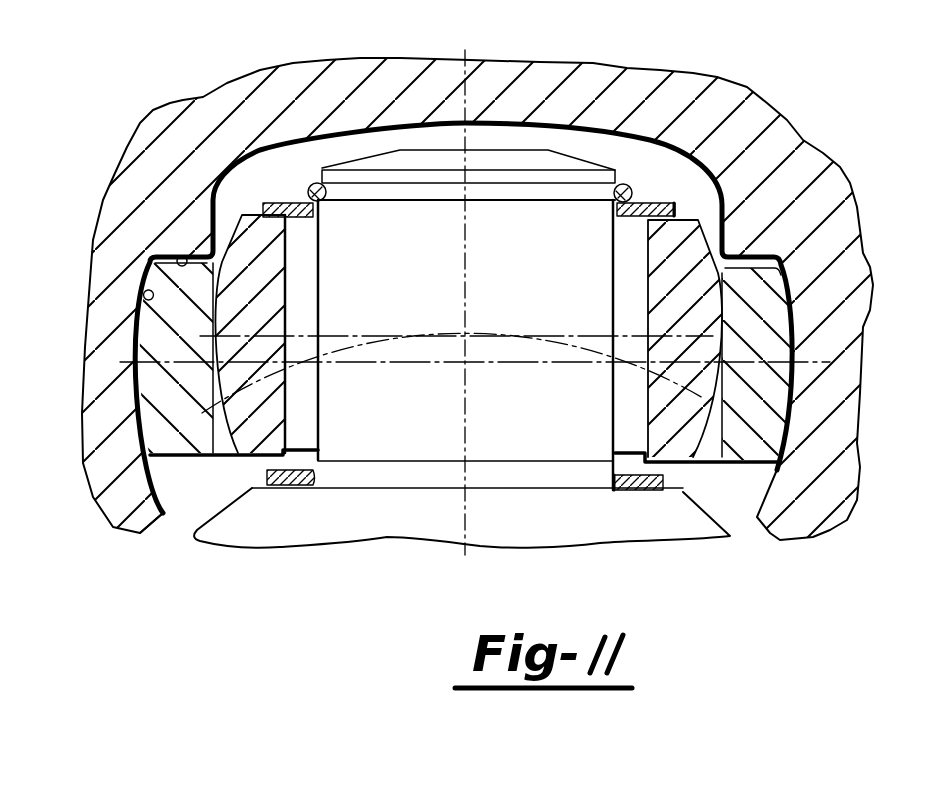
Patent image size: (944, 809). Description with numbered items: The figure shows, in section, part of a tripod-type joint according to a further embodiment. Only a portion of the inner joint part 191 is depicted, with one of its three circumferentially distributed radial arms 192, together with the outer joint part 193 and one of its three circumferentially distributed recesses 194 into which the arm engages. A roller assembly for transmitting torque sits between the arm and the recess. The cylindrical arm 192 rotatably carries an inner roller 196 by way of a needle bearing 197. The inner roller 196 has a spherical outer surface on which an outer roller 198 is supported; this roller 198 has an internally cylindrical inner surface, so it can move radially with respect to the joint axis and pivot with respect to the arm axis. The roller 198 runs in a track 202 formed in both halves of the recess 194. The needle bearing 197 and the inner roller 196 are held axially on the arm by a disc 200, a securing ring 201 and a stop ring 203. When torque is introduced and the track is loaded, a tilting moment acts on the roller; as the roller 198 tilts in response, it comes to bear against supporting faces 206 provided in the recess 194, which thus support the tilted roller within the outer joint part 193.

The inner joint part 191 is at (330, 510).
The radial arm 192 is at (387, 423).
The outer joint part 193 is at (627, 108).
The recess 194 is at (270, 175).
The inner roller 196 is at (683, 432).
The needle bearing 197 is at (617, 455).
The roller 198 is at (745, 445).
The disc 200 is at (673, 215).
The securing ring 201 is at (650, 197).
The track 202 is at (141, 285).
The stop ring 203 is at (288, 480).
The supporting faces 206 is at (173, 257).